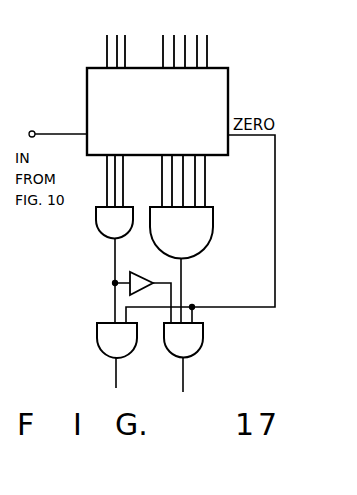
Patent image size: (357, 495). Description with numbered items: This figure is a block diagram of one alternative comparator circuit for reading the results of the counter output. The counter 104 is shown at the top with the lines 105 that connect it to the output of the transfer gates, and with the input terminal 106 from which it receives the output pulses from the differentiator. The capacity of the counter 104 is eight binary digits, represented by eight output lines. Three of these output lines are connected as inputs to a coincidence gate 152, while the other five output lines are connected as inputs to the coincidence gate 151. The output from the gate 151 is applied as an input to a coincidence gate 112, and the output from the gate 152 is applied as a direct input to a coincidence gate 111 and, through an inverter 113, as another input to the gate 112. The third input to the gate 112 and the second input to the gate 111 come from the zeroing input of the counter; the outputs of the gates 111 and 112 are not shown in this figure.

The counter 104 is at (218, 107).
The lines 105 is at (176, 33).
The input terminal 106 is at (33, 131).
The coincidence gate 111 is at (110, 340).
The coincidence gate 112 is at (190, 343).
The inverter 113 is at (142, 277).
The coincidence gate 151 is at (200, 232).
The coincidence gate 152 is at (112, 225).